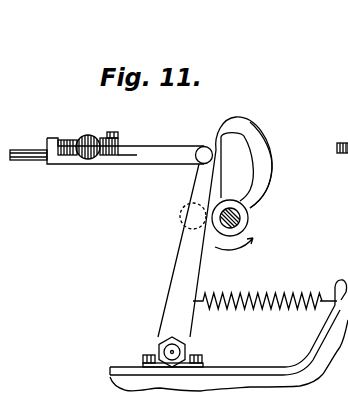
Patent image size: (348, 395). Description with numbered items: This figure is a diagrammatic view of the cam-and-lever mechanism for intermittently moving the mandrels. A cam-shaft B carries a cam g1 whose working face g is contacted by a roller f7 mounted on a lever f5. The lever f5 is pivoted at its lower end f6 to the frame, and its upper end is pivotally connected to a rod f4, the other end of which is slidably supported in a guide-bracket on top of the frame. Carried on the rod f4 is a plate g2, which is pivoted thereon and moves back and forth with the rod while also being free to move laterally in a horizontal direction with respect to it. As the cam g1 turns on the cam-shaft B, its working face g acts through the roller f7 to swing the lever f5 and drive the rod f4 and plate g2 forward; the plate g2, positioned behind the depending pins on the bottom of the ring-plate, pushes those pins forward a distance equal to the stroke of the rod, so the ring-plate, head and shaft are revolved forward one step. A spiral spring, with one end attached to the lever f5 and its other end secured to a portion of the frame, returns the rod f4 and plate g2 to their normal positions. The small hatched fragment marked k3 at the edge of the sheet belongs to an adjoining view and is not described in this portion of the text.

The rod f4 is at (32, 157).
The plate g2 is at (67, 138).
The lever f5 is at (188, 263).
The roller f7 is at (181, 218).
The working face of cam g is at (214, 133).
The cam g1 is at (262, 162).
The cam-shaft B is at (240, 222).
The lower end of lever f6 is at (187, 352).
The fragment element k3 is at (347, 127).